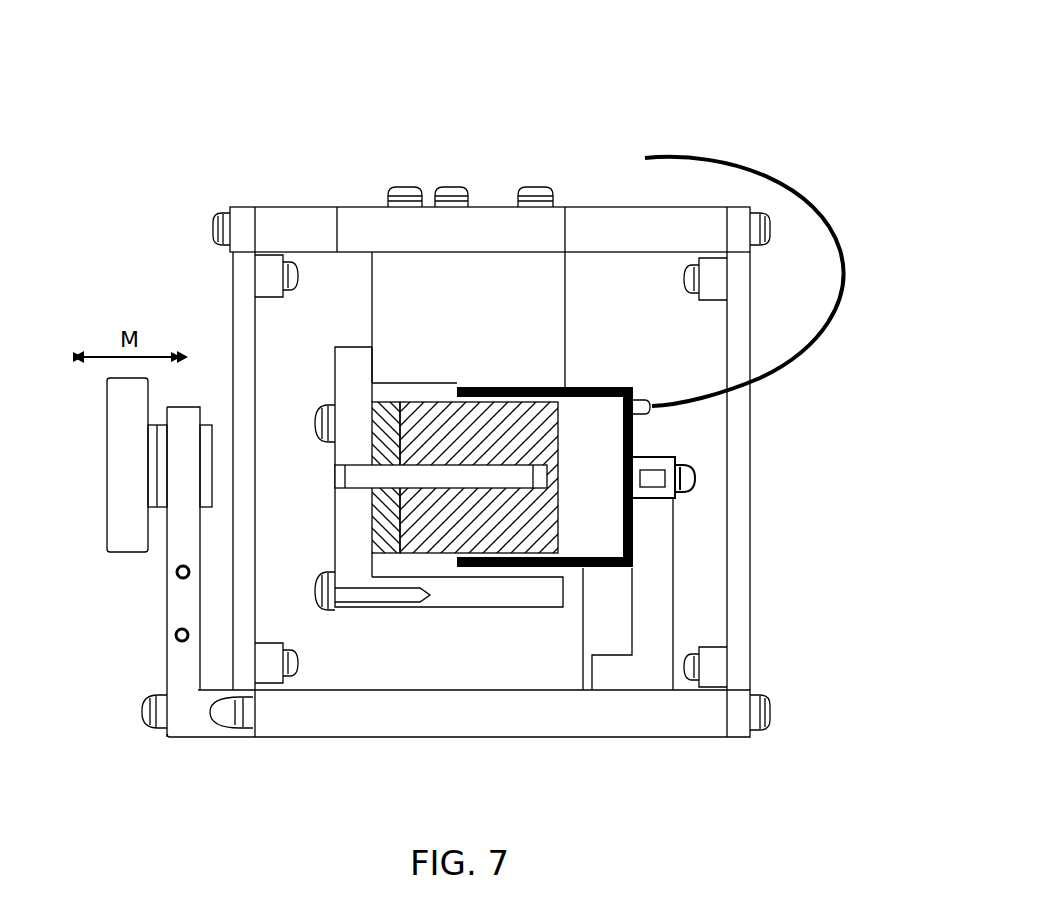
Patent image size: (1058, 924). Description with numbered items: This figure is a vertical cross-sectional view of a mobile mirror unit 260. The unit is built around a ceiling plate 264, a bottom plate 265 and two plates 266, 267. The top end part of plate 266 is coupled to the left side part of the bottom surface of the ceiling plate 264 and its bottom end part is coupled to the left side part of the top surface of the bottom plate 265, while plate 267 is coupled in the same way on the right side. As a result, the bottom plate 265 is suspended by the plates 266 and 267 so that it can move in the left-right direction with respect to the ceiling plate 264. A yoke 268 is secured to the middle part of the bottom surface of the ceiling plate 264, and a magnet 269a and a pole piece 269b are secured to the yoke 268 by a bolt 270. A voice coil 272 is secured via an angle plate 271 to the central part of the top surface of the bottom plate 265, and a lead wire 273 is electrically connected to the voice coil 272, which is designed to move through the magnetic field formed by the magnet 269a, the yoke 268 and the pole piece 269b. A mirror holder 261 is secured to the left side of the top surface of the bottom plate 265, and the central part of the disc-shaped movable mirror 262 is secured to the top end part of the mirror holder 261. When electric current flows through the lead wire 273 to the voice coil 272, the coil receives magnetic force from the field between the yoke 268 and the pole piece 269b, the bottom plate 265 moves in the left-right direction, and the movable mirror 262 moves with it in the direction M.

The mobile mirror unit 260 is at (498, 130).
The mirror holder 261 is at (182, 668).
The movable mirror 262 is at (124, 535).
The ceiling plate 264 is at (283, 223).
The bottom plate 265 is at (285, 713).
The plate 266 is at (242, 320).
The plate 267 is at (740, 603).
The yoke 268 is at (395, 282).
The magnet 269a is at (388, 538).
The pole piece 269b is at (433, 530).
The bolt 270 is at (517, 478).
The angle plate 271 is at (625, 677).
The voice coil 272 is at (480, 567).
The lead wire 273 is at (787, 177).